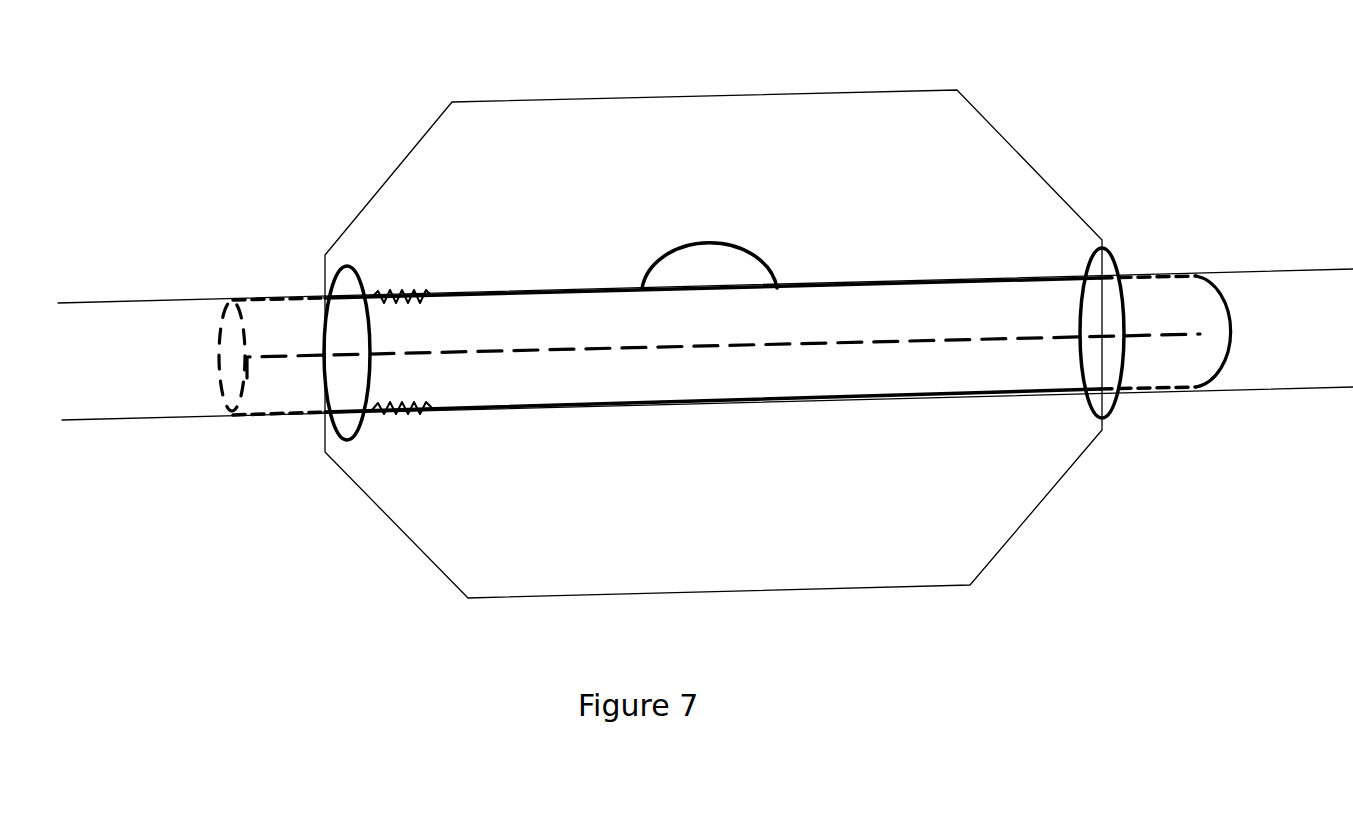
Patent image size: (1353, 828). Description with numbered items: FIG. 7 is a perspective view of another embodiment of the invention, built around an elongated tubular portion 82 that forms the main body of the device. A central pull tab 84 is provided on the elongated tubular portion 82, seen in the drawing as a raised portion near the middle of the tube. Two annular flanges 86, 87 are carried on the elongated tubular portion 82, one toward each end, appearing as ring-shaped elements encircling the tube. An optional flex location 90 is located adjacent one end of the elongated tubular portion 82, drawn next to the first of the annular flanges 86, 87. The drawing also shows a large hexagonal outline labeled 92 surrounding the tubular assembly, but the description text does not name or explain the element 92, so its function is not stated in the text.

The elongated tubular portion 82 is at (477, 387).
The central pull tab 84 is at (738, 240).
The annular flange 86 is at (343, 278).
The annular flange 87 is at (1112, 258).
The flex location 90 is at (408, 278).
The hexagonal nut 92 is at (698, 425).